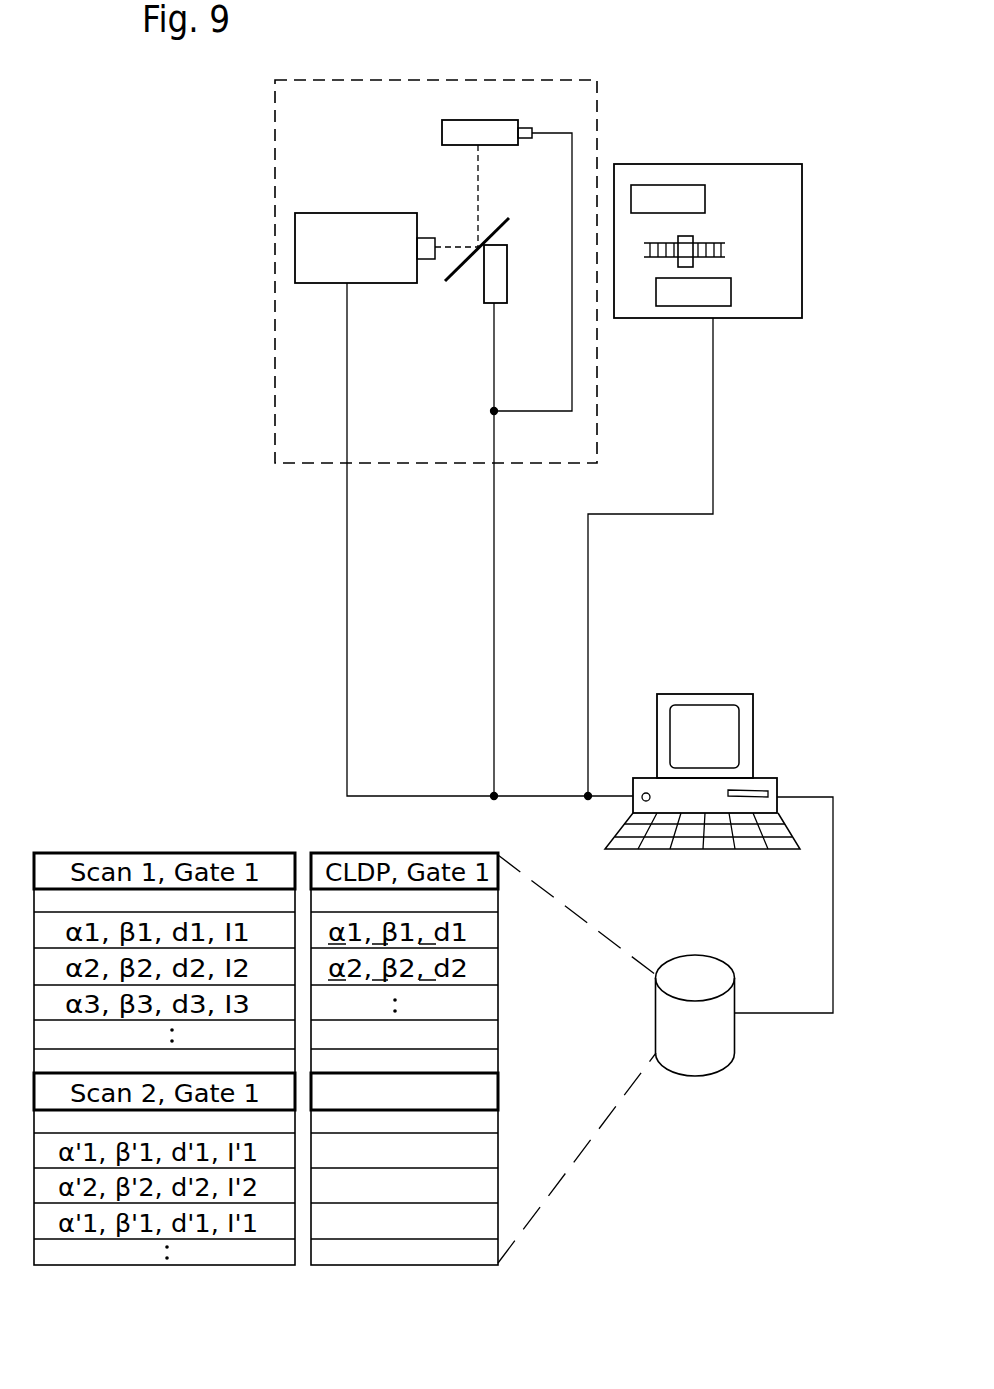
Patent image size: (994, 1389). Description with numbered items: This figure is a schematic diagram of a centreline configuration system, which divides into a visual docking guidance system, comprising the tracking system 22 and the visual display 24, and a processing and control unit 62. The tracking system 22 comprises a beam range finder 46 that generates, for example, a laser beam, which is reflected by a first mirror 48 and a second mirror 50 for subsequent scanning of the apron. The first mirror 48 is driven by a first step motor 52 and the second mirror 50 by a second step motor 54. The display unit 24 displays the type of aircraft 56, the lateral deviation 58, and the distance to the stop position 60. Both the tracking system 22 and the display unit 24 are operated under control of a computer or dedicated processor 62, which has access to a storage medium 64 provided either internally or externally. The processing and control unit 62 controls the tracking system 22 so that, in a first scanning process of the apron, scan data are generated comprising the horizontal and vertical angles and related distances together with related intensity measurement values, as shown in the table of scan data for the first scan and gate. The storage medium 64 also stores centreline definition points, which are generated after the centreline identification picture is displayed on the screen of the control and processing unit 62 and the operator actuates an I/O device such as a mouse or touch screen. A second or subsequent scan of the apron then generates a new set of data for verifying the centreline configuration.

The tracking system 22 is at (275, 150).
The visual display 24 is at (802, 182).
The beam range finder 46 is at (298, 259).
The first mirror 48 is at (508, 221).
The second mirror 50 is at (444, 132).
The first step motor 52 is at (505, 290).
The second step motor 54 is at (530, 128).
The type of aircraft 56 is at (704, 190).
The lateral deviation 58 is at (708, 240).
The distance to the stop position 60 is at (731, 290).
The processing and control unit 62 is at (753, 712).
The storage medium 64 is at (735, 1040).